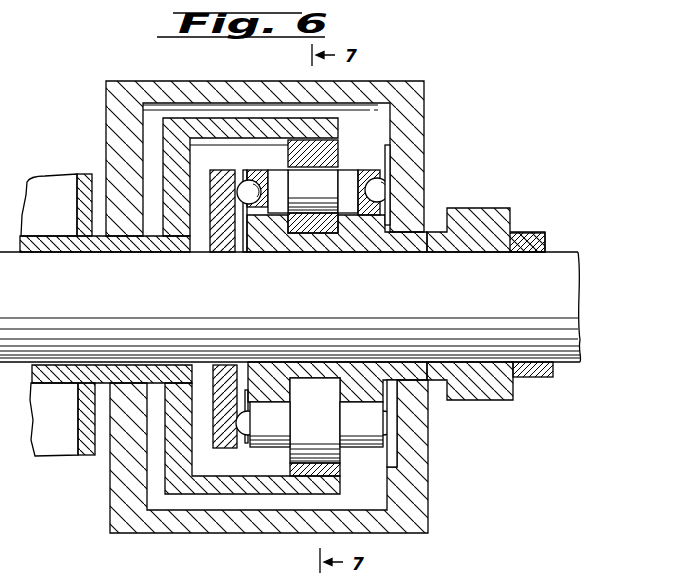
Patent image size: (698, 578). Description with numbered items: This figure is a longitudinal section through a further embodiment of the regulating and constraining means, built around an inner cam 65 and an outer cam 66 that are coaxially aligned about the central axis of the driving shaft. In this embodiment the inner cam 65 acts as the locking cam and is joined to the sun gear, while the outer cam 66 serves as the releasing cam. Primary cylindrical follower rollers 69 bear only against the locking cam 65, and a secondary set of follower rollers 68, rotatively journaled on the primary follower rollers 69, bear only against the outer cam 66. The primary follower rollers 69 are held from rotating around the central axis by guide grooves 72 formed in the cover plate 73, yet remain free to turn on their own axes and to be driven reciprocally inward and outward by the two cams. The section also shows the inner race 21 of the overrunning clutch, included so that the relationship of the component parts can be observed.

The overrunning clutch inner race 21 is at (488, 213).
The inner cam 65 is at (325, 246).
The outer cam 66 is at (308, 137).
The secondary follower rollers 68 is at (327, 155).
The primary follower rollers 69 is at (315, 308).
The guide grooves 72 is at (388, 455).
The cover plate 73 is at (420, 479).